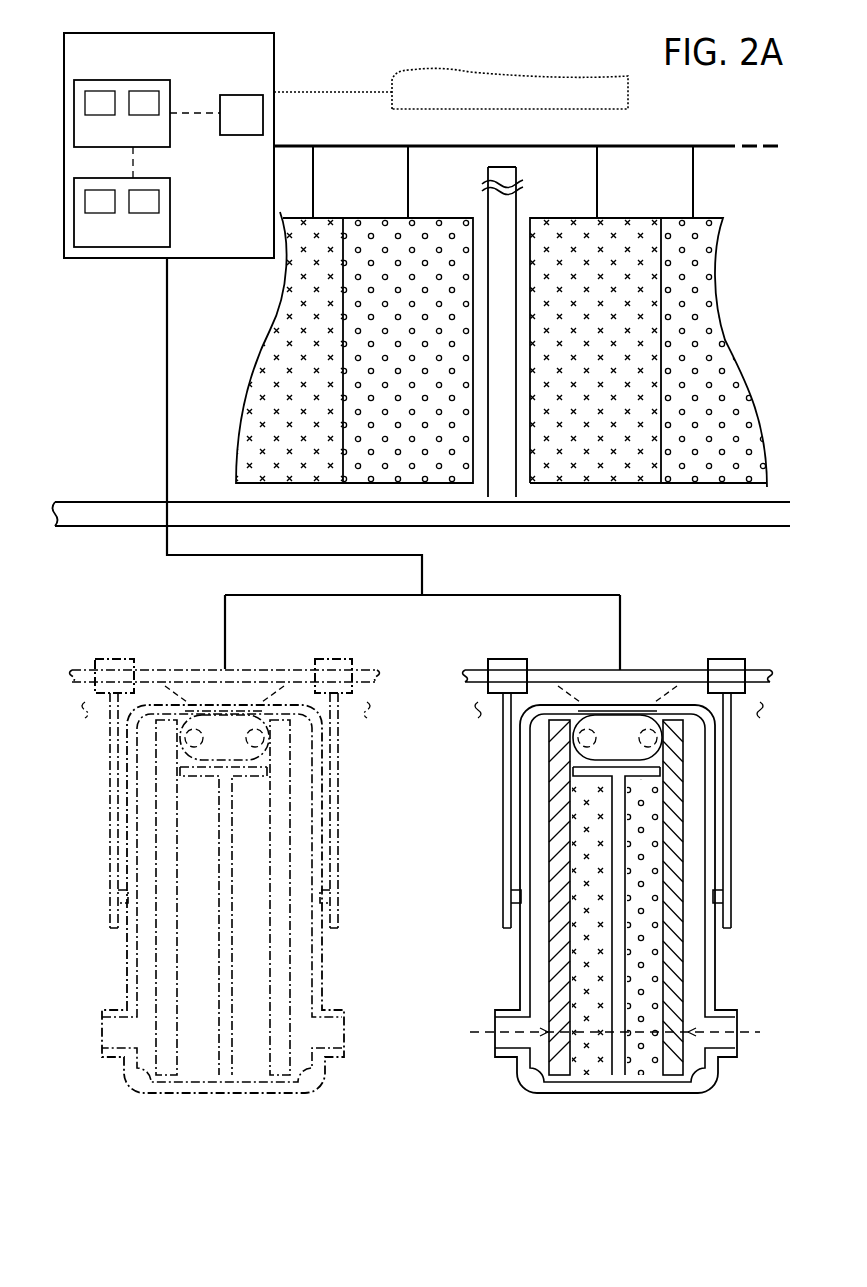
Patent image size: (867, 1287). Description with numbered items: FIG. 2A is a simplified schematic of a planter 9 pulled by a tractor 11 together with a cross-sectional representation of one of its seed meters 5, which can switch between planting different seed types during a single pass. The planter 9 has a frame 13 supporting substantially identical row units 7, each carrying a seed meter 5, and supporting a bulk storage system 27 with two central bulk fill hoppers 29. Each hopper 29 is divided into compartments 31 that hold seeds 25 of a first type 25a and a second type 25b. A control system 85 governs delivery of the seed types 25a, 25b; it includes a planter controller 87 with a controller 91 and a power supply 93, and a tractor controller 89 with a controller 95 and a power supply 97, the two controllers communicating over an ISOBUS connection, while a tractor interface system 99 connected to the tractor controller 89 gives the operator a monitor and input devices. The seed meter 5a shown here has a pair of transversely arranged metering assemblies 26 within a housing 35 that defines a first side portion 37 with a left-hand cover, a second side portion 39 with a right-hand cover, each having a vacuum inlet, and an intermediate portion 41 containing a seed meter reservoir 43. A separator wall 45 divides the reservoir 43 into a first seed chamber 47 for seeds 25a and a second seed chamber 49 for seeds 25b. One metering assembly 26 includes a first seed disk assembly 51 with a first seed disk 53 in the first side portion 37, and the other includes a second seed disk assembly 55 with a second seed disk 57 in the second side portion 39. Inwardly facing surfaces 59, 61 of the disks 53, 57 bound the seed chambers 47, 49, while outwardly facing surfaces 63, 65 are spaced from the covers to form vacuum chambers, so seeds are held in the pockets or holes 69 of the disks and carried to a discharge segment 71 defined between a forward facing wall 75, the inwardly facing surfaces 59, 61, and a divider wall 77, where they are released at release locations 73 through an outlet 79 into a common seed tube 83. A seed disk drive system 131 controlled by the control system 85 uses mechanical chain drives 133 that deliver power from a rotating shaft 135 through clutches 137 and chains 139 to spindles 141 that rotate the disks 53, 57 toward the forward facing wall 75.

The control system 85 is at (165, 33).
The tractor controller 89 is at (147, 115).
The controller 95 is at (98, 116).
The power supply 97 is at (135, 116).
The tractor interface system 99 is at (237, 95).
The planter controller 87 is at (146, 213).
The controller 91 is at (98, 214).
The power supply 93 is at (135, 214).
The tractor 11 is at (392, 86).
The planter 9 is at (693, 122).
The bulk storage system 27 is at (740, 138).
The bulk fill hopper 29 is at (458, 317).
The compartment 31 is at (442, 212).
The seeds 25 is at (501, 317).
The first seed type 25a is at (262, 415).
The second seed type 25b is at (381, 440).
The frame 13 is at (113, 499).
The seed meter 5 is at (90, 1063).
The seed meter 5a is at (430, 935).
The row unit 7 is at (496, 954).
The seed disk drive system 131 is at (427, 894).
The clutch 137 is at (487, 665).
The rotating shaft 135 is at (546, 669).
The mechanical chain drive 133 is at (617, 760).
The chain 139 is at (503, 863).
The spindle 141 is at (522, 897).
The first side portion 37 is at (601, 933).
The second side portion 39 is at (725, 1085).
The metering assembly 26 is at (535, 1100).
The release location 73 is at (622, 720).
The forward facing wall 75 is at (622, 694).
The housing 35 is at (649, 694).
The seed tube 83 is at (649, 694).
The outlet 79 is at (649, 694).
The discharge segment 71 is at (618, 949).
The divider wall 77 is at (566, 963).
The intermediate portion 41 is at (618, 963).
The separator wall 45 is at (612, 975).
The first seed disk assembly 51 is at (565, 897).
The first seed disk 53 is at (565, 897).
The inwardly facing surface 59 is at (576, 897).
The outwardly facing surface 63 is at (548, 1008).
The second seed disk assembly 55 is at (722, 891).
The second seed disk 57 is at (722, 891).
The inwardly facing surface 61 is at (714, 891).
The outwardly facing surface 65 is at (681, 1010).
The seed meter reservoir 43 is at (583, 975).
The first seed chamber 47 is at (590, 1080).
The second seed chamber 49 is at (643, 1079).
The seed pockets or holes 69 is at (618, 1033).